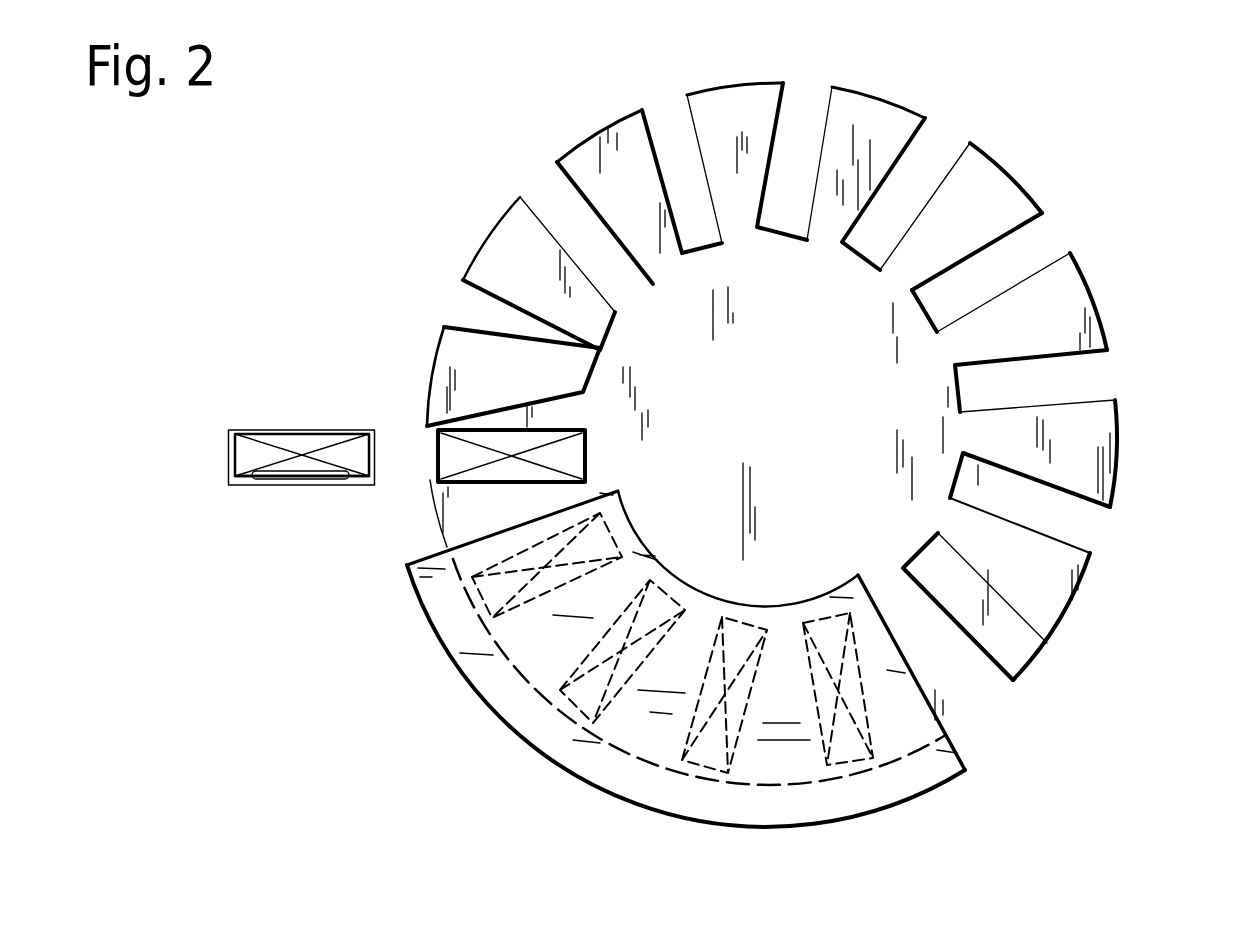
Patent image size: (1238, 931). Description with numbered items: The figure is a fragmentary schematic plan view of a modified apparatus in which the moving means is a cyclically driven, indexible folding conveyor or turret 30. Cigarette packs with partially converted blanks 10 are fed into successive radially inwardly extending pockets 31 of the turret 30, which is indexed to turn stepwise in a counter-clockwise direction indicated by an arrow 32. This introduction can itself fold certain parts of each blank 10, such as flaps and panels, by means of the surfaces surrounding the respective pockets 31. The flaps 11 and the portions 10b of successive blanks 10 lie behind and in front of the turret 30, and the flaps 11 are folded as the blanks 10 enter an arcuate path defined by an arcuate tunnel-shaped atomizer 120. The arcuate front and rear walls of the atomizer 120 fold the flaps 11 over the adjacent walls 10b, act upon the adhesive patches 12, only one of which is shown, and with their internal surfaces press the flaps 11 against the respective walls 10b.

The blank 10 is at (590, 460).
The wall 10b is at (297, 441).
The flap 11 is at (294, 488).
The adhesive patch 12 is at (279, 464).
The turret 30 is at (1003, 158).
The pocket 31 is at (1038, 243).
The arrow 32 is at (478, 167).
The arcuate tunnel-shaped atomizer 120 is at (547, 728).